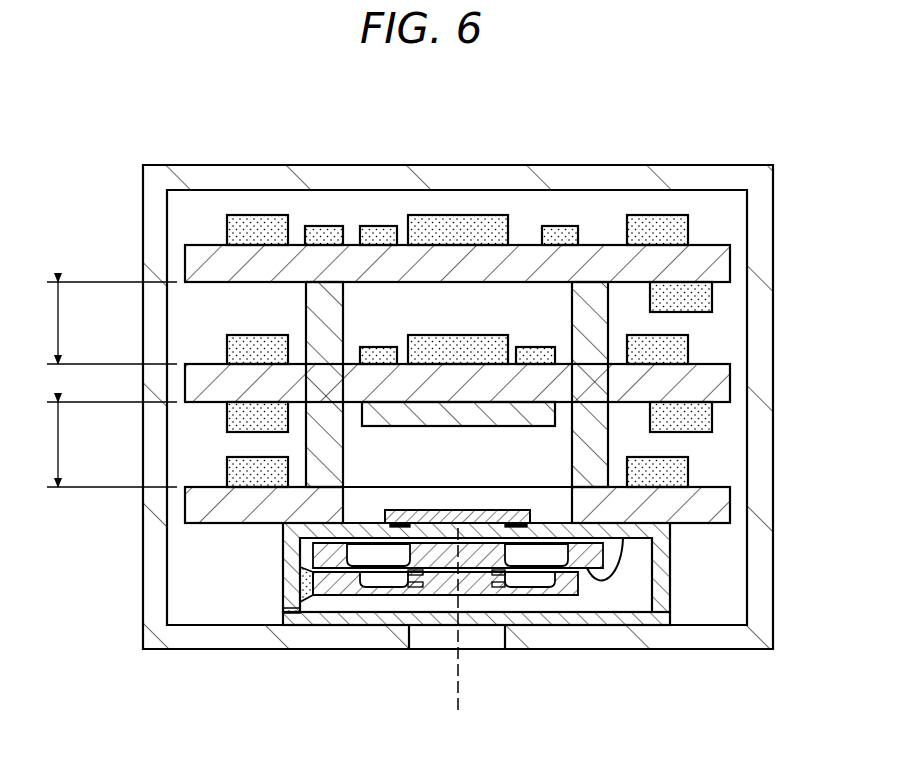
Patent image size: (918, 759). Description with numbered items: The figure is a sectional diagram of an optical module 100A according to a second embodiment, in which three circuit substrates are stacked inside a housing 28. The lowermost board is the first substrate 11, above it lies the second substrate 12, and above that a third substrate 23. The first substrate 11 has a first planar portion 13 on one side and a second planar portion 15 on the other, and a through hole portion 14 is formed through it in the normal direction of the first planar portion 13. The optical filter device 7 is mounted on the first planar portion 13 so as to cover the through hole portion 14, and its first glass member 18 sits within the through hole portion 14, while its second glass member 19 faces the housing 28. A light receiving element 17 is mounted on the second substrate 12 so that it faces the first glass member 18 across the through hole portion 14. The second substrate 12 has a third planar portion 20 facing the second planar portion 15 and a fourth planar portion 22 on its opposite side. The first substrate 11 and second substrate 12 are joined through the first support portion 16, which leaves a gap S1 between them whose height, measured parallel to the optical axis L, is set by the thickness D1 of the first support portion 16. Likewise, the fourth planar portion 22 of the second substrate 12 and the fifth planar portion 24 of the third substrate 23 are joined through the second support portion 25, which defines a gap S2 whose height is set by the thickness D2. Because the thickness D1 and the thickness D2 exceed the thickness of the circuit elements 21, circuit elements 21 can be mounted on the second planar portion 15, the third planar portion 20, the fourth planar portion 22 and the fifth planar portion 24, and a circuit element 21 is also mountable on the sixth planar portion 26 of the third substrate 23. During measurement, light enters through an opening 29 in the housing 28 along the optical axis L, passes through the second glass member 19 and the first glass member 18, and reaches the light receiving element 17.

The optical module 100A is at (833, 83).
The optical filter device 7 is at (262, 577).
The first substrate 11 is at (192, 505).
The second substrate 12 is at (193, 382).
The first planar portion 13 is at (196, 522).
The through hole portion 14 is at (548, 497).
The second planar portion 15 is at (197, 484).
The first support portion 16 is at (345, 450).
The light receiving element 17 is at (477, 428).
The first glass member 18 is at (447, 510).
The second glass member 19 is at (287, 617).
The third planar portion 20 is at (196, 405).
The circuit element 21 is at (566, 226).
The fourth planar portion 22 is at (197, 362).
The third substrate 23 is at (193, 262).
The fifth planar portion 24 is at (196, 285).
The second support portion 25 is at (345, 310).
The sixth planar portion 26 is at (197, 243).
The housing 28 is at (241, 637).
The opening 29 is at (427, 637).
The optical axis L is at (458, 687).
The gap S1 is at (632, 432).
The gap S2 is at (633, 312).
The thickness D1 is at (97, 444).
The thickness D2 is at (97, 323).